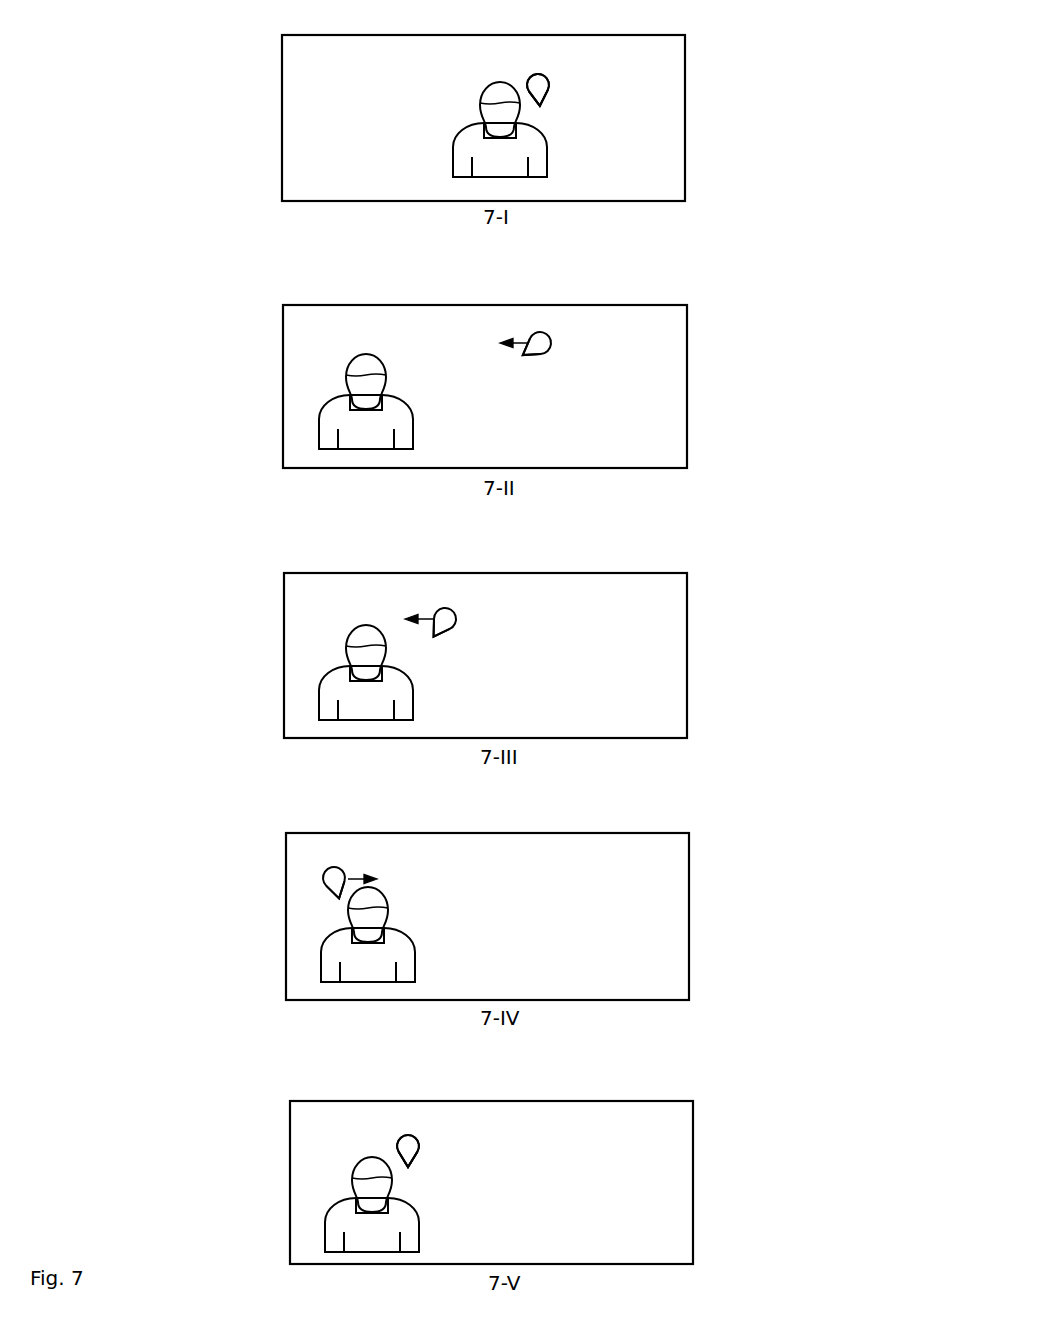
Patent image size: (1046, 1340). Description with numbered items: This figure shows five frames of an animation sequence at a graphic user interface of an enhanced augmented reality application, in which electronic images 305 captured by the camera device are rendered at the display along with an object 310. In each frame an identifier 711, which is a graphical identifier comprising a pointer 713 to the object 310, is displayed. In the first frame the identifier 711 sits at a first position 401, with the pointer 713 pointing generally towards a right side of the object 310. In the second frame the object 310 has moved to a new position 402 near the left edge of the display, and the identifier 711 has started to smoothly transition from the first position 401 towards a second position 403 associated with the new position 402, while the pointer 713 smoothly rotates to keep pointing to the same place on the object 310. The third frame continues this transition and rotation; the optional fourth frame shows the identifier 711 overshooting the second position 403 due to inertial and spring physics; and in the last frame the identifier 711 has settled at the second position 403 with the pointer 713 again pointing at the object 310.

The electronic images 305 is at (299, 41).
The object 310 is at (457, 138).
The first position 401 is at (566, 58).
The new position 402 is at (352, 461).
The second position 403 is at (412, 1127).
The identifier 711 is at (566, 93).
The pointer 713 is at (540, 106).